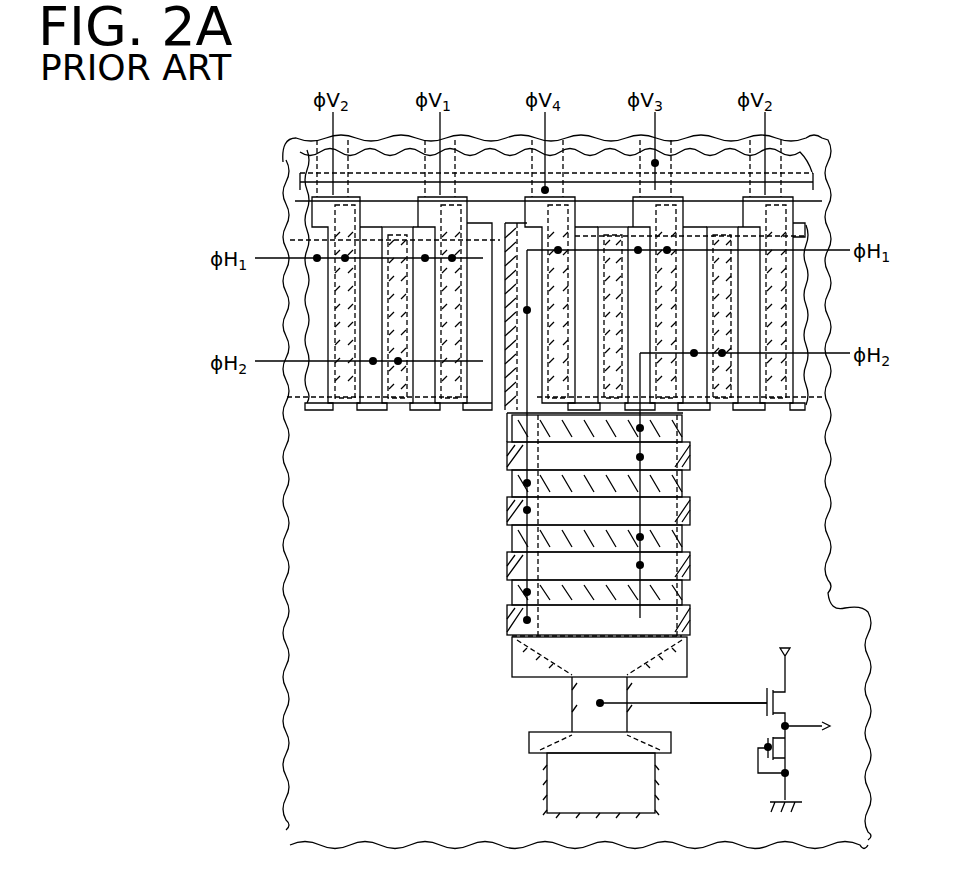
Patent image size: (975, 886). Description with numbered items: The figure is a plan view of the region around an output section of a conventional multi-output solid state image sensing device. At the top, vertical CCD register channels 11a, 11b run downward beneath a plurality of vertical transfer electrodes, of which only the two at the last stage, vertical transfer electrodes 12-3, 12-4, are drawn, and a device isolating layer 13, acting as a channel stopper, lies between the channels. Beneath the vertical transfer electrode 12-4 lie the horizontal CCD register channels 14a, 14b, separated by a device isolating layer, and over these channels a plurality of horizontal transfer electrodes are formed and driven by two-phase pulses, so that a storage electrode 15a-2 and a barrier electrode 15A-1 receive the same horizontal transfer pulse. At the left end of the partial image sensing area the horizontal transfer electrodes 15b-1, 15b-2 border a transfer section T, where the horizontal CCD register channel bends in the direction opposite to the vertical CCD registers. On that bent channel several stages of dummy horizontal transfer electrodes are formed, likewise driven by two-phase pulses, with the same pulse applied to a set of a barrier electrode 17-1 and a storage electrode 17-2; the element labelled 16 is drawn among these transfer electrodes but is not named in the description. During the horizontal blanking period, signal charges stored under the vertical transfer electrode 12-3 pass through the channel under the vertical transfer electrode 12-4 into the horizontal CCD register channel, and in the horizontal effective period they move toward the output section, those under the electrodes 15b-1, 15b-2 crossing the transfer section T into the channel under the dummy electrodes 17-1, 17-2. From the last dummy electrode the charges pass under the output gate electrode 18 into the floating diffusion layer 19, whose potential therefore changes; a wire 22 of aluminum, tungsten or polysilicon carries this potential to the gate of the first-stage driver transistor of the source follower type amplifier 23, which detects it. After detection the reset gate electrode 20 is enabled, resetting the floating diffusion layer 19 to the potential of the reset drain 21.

The vertical CCD register channel 11a is at (323, 140).
The vertical CCD register channel 11b is at (535, 138).
The device isolating layer 13 is at (380, 142).
The vertical transfer electrode 12-3 is at (818, 163).
The vertical transfer electrode 12-4 is at (822, 192).
The horizontal CCD register channel 14a is at (297, 291).
The horizontal CCD register channel 14b is at (823, 303).
The storage electrode 15a-2 is at (415, 408).
The barrier electrode 15A-1 is at (448, 405).
The barrier electrode 15b-1 is at (735, 404).
The storage electrode 15b-2 is at (750, 410).
The transfer electrode 16 is at (342, 408).
The barrier electrode 17-1 is at (685, 428).
The storage electrode 17-2 is at (685, 458).
The transfer section T is at (507, 413).
The output gate electrode 18 is at (512, 657).
The floating diffusion layer 19 is at (585, 700).
The reset gate electrode 20 is at (529, 745).
The reset drain 21 is at (562, 778).
The wire 22 is at (712, 705).
The source follower type amplifier 23 is at (813, 707).